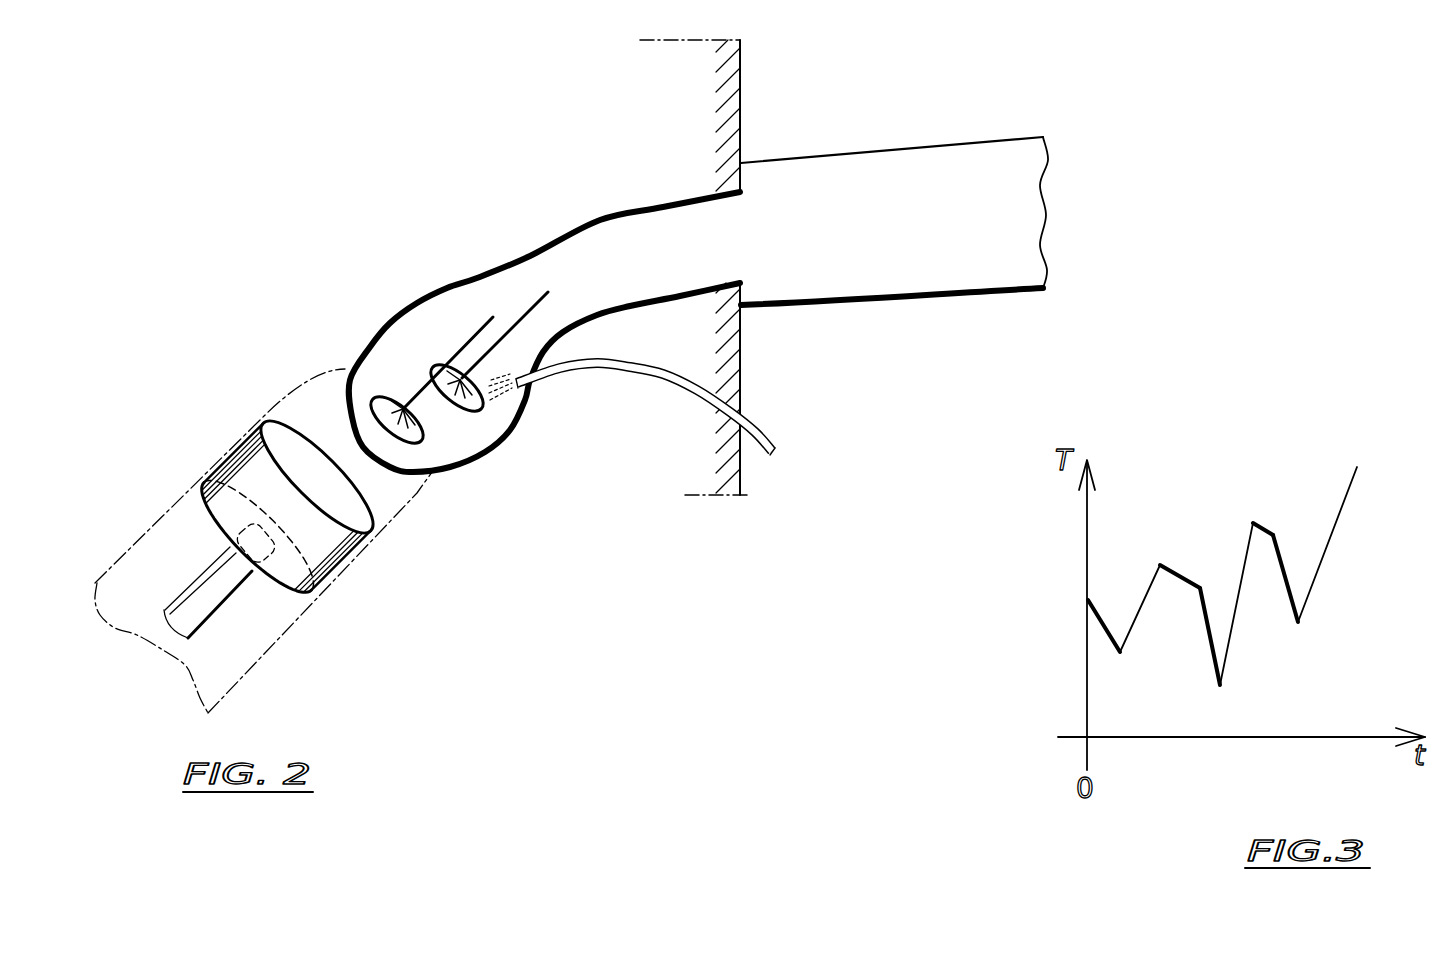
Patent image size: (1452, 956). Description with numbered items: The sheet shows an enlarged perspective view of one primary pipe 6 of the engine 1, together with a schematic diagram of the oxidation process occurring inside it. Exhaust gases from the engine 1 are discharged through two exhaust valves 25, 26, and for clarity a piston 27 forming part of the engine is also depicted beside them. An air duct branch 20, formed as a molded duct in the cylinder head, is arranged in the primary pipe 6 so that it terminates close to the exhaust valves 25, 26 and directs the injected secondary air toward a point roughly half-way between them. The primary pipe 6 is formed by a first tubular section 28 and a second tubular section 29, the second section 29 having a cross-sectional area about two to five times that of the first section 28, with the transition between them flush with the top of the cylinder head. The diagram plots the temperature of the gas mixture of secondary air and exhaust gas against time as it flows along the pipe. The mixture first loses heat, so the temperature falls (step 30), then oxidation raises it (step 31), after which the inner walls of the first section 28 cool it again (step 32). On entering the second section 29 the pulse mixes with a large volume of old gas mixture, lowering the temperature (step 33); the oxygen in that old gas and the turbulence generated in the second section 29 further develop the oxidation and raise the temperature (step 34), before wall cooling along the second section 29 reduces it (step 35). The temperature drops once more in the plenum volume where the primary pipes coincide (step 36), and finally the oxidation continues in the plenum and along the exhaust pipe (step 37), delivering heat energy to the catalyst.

In FIG. 2, the engine 1 is at (727, 80).
In FIG. 2, the primary pipe 6 is at (590, 160).
In FIG. 2, the air duct branch 20 is at (624, 367).
In FIG. 2, the exhaust valve 25 is at (430, 365).
In FIG. 2, the exhaust valve 26 is at (378, 392).
In FIG. 2, the piston 27 is at (238, 445).
In FIG. 2, the first tubular section 28 is at (478, 293).
In FIG. 2, the second tubular section 29 is at (840, 160).
In FIG. 3, the step 30 is at (1118, 651).
In FIG. 3, the step 31 is at (1150, 588).
In FIG. 3, the step 32 is at (1171, 568).
In FIG. 3, the step 33 is at (1218, 681).
In FIG. 3, the step 34 is at (1243, 562).
In FIG. 3, the step 35 is at (1263, 530).
In FIG. 3, the step 36 is at (1298, 617).
In FIG. 3, the step 37 is at (1342, 510).